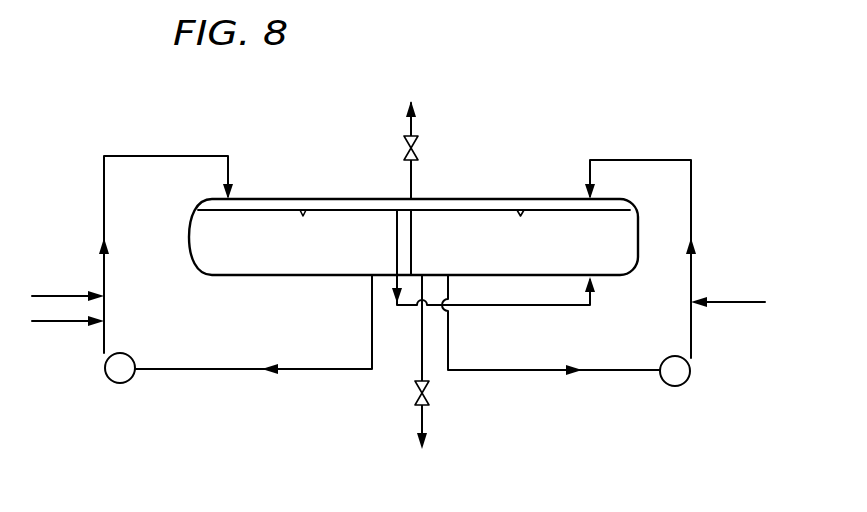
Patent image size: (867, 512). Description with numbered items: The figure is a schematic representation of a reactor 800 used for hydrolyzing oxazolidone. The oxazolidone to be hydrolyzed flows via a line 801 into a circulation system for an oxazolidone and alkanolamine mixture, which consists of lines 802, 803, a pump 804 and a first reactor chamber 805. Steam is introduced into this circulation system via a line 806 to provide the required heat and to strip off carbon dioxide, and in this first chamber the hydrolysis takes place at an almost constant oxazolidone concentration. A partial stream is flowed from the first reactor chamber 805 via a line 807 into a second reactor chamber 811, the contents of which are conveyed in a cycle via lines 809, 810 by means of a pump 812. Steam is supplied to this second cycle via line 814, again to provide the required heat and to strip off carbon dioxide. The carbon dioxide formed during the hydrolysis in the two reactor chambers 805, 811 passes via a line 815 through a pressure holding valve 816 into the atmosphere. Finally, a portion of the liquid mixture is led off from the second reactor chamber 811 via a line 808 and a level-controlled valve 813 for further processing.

The reactor 800 is at (283, 192).
The line 801 is at (57, 324).
The line 802 is at (238, 371).
The line 803 is at (103, 187).
The pump 804 is at (131, 379).
The first reactor chamber 805 is at (368, 222).
The line 806 is at (58, 294).
The line 807 is at (511, 313).
The line 808 is at (420, 348).
The line 809 is at (551, 347).
The line 810 is at (692, 210).
The second reactor chamber 811 is at (546, 222).
The pump 812 is at (686, 383).
The level-controlled valve 813 is at (428, 398).
The line 814 is at (733, 301).
The line 815 is at (413, 186).
The pressure holding valve 816 is at (406, 150).